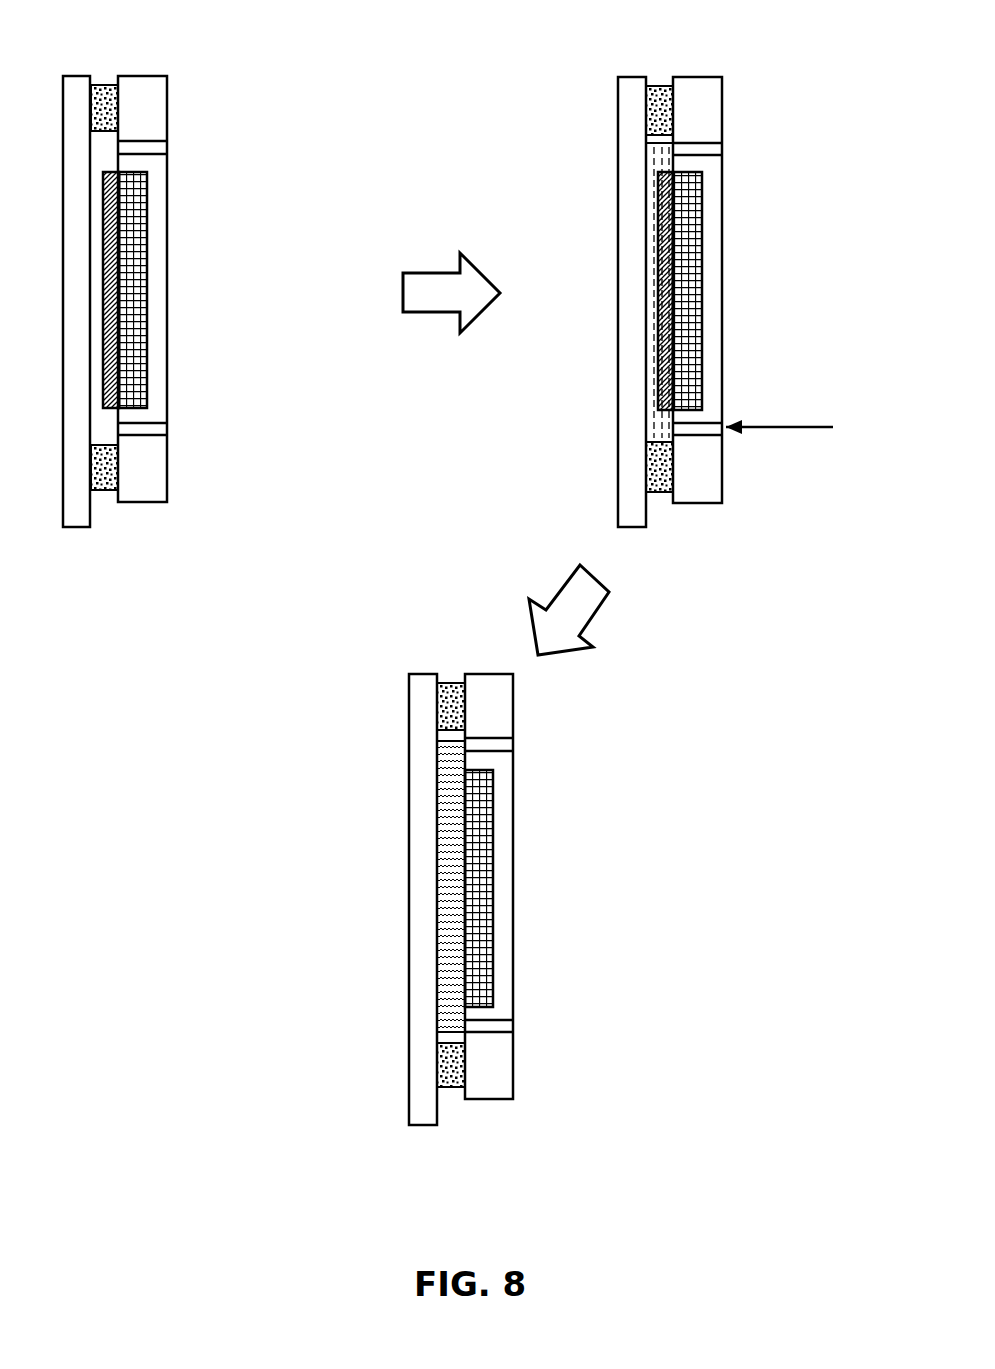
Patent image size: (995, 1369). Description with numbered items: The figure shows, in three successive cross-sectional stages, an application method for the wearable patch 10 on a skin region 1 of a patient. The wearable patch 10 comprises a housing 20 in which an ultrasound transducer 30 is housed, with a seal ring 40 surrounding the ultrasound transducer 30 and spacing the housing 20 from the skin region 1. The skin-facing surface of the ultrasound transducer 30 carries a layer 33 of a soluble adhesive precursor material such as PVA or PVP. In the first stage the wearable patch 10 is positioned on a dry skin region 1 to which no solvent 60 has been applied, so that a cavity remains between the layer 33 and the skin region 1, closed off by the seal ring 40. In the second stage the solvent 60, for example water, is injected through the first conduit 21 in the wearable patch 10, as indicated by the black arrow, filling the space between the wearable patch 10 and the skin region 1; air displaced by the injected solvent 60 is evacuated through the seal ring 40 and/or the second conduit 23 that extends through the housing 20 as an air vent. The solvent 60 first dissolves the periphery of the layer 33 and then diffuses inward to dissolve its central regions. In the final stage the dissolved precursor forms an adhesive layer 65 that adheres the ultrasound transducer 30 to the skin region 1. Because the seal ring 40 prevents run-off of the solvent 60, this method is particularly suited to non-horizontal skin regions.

The skin region 1 is at (354, 654).
The wearable patch 10 is at (448, 634).
The housing 20 is at (464, 587).
The first conduit 21 is at (455, 711).
The second conduit 23 is at (104, 71).
The ultrasound transducer 30 is at (457, 589).
The layer of soluble precursor material 33 is at (453, 589).
The seal ring 40 is at (390, 639).
The solvent 60 is at (608, 292).
The adhesive layer 65 is at (398, 886).